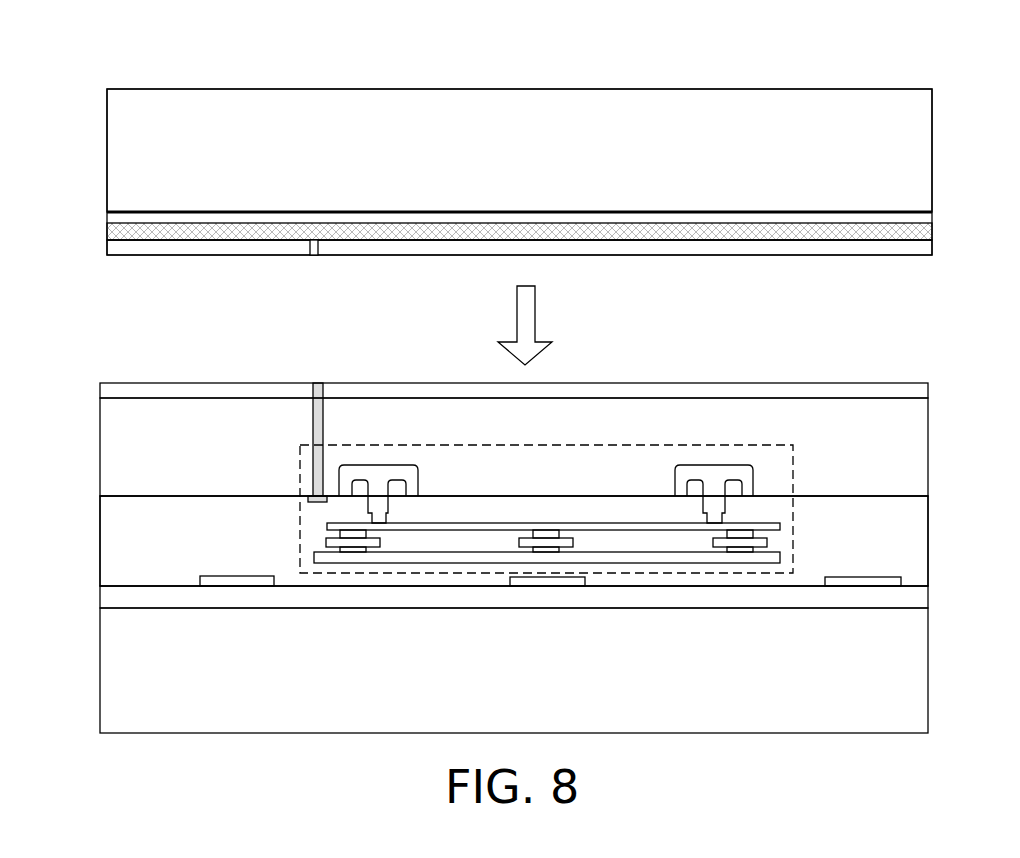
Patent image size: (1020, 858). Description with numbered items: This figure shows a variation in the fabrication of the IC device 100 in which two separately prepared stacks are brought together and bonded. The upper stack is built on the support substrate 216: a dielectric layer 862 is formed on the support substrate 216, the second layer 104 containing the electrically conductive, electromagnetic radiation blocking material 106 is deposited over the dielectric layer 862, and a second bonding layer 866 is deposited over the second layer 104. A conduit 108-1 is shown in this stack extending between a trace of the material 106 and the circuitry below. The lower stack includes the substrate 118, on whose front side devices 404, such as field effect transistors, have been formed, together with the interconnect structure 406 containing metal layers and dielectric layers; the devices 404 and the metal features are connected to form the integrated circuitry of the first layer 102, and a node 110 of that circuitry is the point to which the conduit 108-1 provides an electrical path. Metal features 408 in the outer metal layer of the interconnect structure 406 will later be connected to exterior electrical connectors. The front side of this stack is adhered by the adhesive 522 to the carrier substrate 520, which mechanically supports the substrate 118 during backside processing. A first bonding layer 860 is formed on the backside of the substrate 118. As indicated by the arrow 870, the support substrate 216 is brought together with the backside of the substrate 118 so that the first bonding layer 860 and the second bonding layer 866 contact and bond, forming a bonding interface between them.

The integrated circuit (IC) device 100 is at (130, 60).
The support substrate 216 is at (203, 156).
The dielectric layer 862 is at (107, 219).
The second layer 104 is at (107, 233).
The electrically conductive, electromagnetic radiation blocking material 106 is at (163, 237).
The second bonding layer 866 is at (107, 251).
The conduit 108-1 is at (313, 268).
The arrow 870 is at (517, 315).
The first bonding layer 860 is at (100, 388).
The substrate 118 is at (178, 449).
The node 110 is at (300, 462).
The device 404 is at (424, 465).
The interconnect structure 406 is at (100, 524).
The first layer 102 is at (180, 539).
The metal feature 408 is at (228, 576).
The adhesive 522 is at (100, 595).
The carrier substrate 520 is at (190, 677).